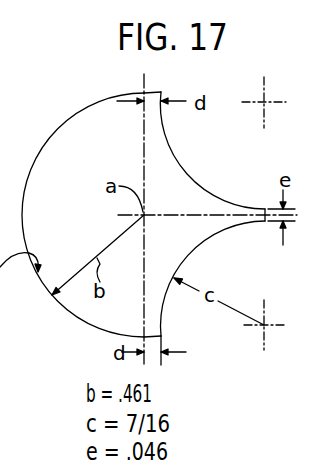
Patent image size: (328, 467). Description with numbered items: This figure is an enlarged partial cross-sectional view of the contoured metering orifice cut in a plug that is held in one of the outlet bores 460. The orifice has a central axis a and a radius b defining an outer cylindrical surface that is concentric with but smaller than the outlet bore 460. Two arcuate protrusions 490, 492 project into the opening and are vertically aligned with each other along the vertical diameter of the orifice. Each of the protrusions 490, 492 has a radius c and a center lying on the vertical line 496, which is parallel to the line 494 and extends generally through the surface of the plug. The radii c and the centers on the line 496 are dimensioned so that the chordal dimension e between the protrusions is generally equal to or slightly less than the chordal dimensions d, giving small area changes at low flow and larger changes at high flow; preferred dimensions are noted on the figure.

The outlet bore 460 is at (49, 124).
The arcuate protrusion 490 is at (212, 174).
The arcuate protrusion 492 is at (207, 256).
The line 494 is at (143, 155).
The vertical line 496 is at (264, 333).